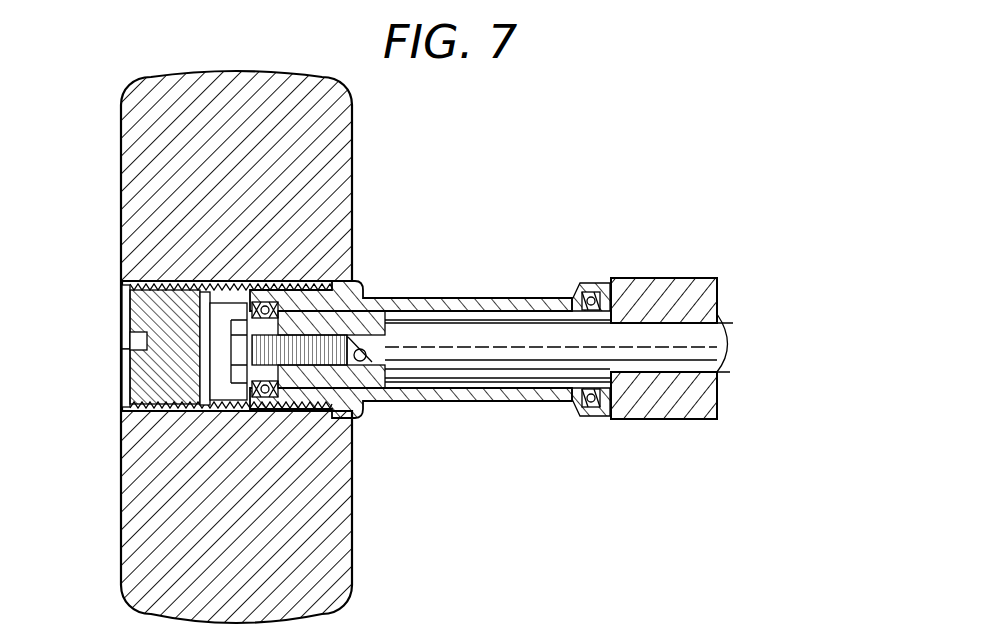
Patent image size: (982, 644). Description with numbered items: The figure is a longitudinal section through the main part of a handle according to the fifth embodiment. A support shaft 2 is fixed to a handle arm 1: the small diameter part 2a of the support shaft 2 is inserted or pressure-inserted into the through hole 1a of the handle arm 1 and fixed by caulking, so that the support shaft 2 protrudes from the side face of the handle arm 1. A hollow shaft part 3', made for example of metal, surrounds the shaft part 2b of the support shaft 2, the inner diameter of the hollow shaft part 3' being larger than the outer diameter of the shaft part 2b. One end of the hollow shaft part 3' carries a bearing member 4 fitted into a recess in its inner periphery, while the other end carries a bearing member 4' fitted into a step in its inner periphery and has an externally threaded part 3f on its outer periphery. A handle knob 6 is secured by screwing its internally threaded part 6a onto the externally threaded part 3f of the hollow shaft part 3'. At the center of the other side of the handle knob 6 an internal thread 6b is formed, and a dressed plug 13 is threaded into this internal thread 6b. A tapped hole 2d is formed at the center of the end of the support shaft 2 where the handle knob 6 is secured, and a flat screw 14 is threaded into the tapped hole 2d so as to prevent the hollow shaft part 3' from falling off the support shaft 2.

The handle arm 1 is at (680, 277).
The through hole 1a is at (716, 364).
The support shaft 2 is at (452, 311).
The small diameter part 2a is at (690, 337).
The shaft part 2b is at (420, 330).
The tapped hole 2d is at (357, 340).
The hollow shaft part 3' is at (411, 323).
The externally threaded part 3f is at (257, 291).
The bearing member 4 is at (591, 379).
The bearing member 4' is at (324, 410).
The handle knob 6 is at (356, 122).
The internally threaded part 6a is at (128, 305).
The internal thread 6b is at (128, 399).
The dressed plug 13 is at (132, 333).
The flat screw 14 is at (230, 372).